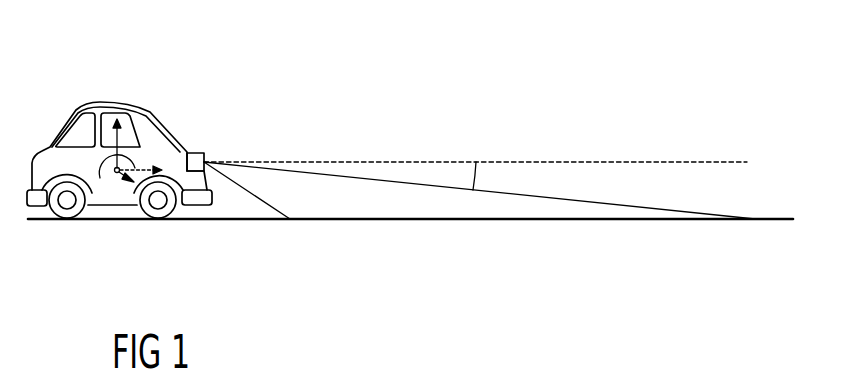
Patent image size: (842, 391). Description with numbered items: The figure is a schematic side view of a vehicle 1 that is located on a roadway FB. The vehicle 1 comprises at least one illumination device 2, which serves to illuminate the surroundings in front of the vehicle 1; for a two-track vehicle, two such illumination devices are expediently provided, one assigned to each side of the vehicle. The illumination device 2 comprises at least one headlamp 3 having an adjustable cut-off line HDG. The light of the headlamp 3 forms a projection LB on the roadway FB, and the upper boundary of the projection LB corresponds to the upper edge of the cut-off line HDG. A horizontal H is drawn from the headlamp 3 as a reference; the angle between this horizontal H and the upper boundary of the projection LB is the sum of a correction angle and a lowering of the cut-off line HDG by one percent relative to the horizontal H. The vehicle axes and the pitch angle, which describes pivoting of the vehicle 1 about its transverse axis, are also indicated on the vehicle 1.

The vehicle 1 is at (93, 104).
The illumination device 2 is at (194, 153).
The headlamp 3 is at (204, 161).
The horizontal H is at (618, 160).
The roadway FB is at (242, 222).
The projection LB is at (402, 207).
The cut-off line HDG is at (753, 223).